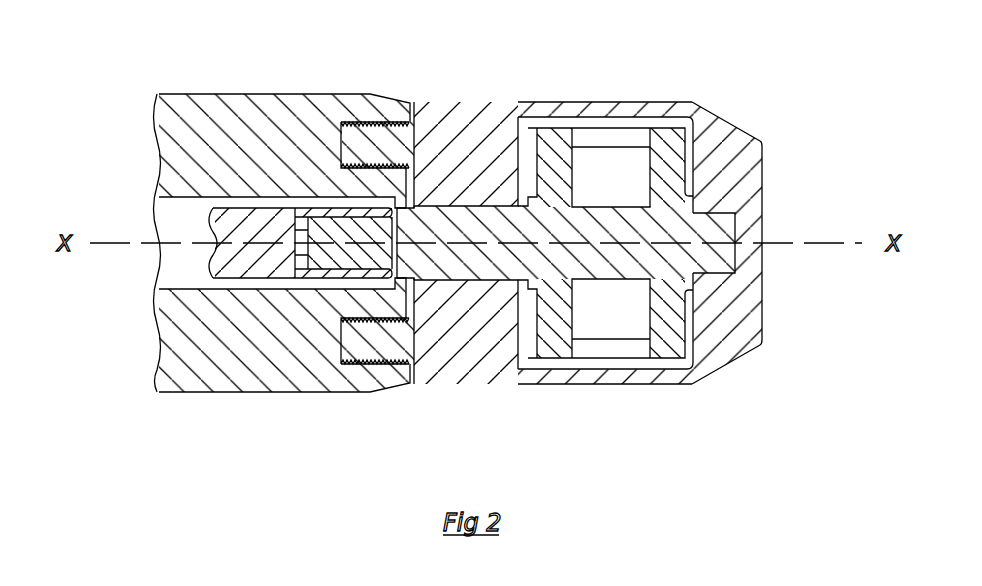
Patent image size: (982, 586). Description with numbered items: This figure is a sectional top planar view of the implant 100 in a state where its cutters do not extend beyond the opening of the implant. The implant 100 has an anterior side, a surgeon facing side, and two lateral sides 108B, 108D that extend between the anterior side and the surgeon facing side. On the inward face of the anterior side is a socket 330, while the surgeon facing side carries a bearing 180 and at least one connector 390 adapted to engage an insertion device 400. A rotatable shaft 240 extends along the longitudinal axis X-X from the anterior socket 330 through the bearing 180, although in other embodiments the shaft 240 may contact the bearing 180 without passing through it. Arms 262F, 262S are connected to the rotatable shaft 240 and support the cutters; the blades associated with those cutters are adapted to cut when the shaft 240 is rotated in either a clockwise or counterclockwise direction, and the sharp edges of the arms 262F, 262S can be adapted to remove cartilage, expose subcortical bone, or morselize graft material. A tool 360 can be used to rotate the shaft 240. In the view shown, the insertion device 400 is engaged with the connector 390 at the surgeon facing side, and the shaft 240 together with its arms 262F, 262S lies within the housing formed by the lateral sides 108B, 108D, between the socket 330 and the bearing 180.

The implant 100 is at (749, 107).
The lateral side 108B is at (508, 100).
The lateral side 108D is at (583, 387).
The bearing 180 is at (471, 287).
The rotatable shaft 240 is at (467, 204).
The arm 262F is at (690, 187).
The arm 262S is at (690, 359).
The socket 330 is at (740, 220).
The tool 360 is at (236, 281).
The connector 390 is at (368, 121).
The insertion device 400 is at (250, 91).